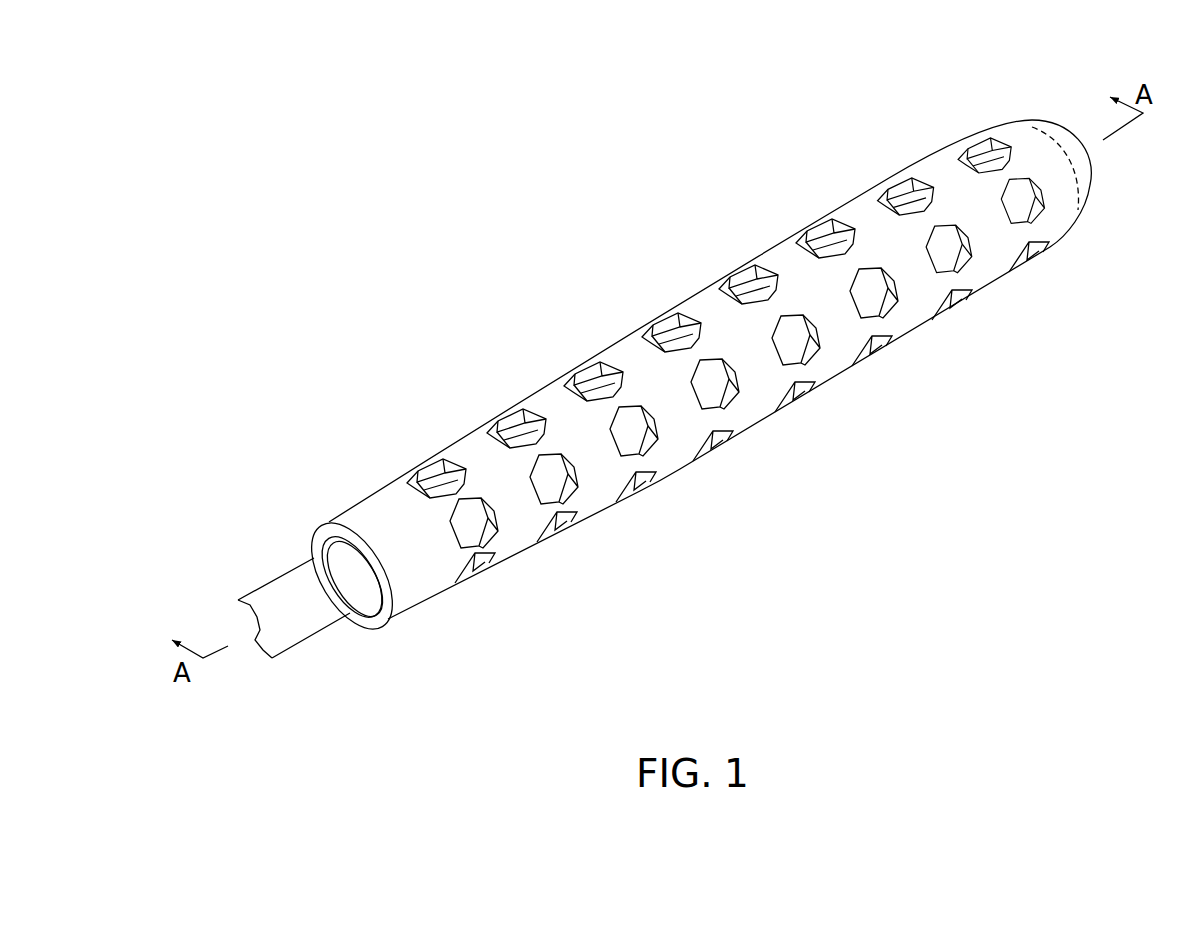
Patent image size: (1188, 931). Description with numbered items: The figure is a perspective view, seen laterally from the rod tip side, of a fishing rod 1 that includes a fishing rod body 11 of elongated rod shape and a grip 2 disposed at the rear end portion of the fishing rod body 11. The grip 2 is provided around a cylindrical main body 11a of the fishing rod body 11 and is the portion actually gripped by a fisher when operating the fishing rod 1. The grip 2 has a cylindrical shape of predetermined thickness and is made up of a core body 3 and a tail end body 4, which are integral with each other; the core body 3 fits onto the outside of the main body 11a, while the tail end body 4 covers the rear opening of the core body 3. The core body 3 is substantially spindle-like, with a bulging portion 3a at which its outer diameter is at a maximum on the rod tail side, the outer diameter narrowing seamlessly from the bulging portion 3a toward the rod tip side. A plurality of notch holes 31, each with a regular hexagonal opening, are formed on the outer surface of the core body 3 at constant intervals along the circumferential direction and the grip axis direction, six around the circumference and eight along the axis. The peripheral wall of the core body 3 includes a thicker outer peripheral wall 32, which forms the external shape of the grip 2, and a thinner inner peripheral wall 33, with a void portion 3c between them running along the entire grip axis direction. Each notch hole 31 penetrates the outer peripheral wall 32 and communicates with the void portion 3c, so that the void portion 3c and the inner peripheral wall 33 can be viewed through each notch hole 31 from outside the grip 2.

The fishing rod 1 is at (418, 268).
The grip 2 is at (860, 188).
The core body 3 is at (682, 298).
The bulging portion 3a is at (768, 250).
The void portion 3c is at (887, 318).
The notch hole 31 is at (593, 370).
The outer peripheral wall 32 is at (838, 325).
The inner peripheral wall 33 is at (712, 387).
The tail end body 4 is at (1090, 167).
The fishing rod body 11 is at (275, 580).
The main body 11a is at (330, 543).